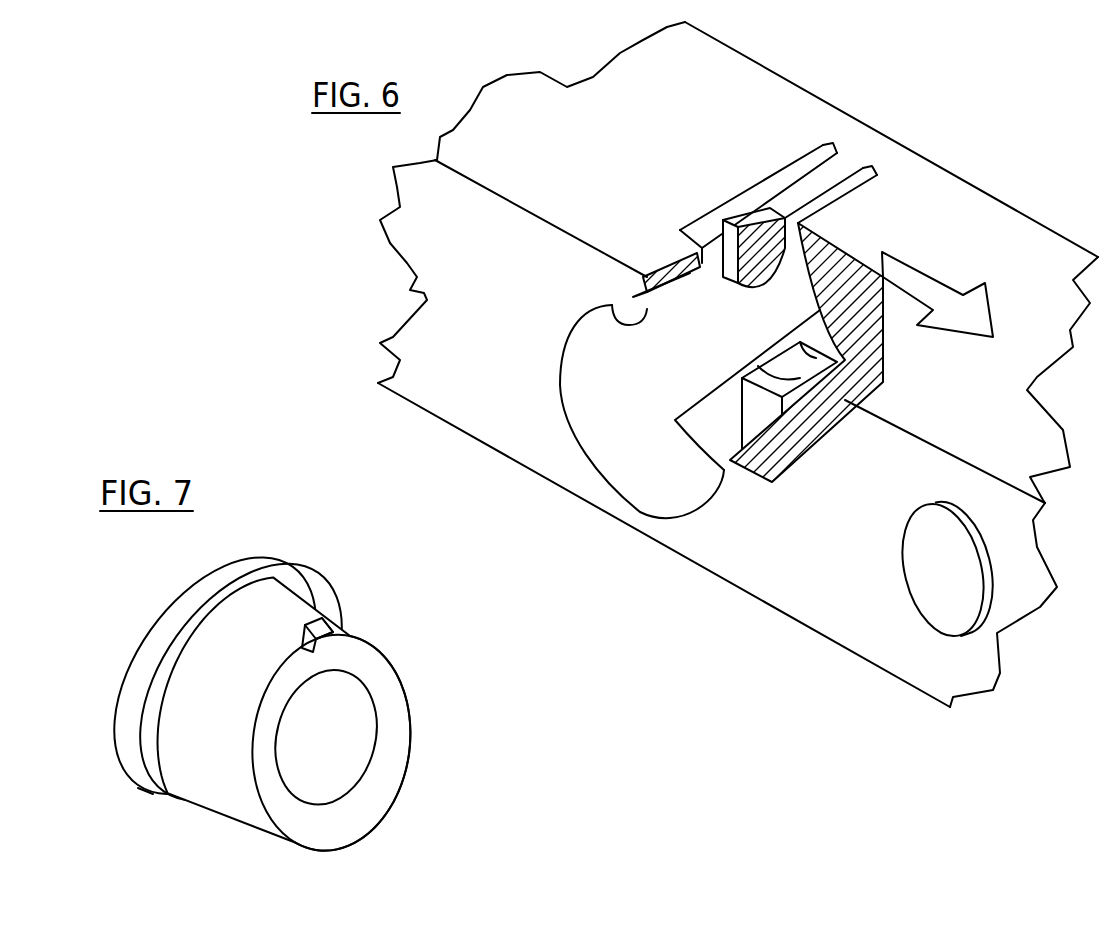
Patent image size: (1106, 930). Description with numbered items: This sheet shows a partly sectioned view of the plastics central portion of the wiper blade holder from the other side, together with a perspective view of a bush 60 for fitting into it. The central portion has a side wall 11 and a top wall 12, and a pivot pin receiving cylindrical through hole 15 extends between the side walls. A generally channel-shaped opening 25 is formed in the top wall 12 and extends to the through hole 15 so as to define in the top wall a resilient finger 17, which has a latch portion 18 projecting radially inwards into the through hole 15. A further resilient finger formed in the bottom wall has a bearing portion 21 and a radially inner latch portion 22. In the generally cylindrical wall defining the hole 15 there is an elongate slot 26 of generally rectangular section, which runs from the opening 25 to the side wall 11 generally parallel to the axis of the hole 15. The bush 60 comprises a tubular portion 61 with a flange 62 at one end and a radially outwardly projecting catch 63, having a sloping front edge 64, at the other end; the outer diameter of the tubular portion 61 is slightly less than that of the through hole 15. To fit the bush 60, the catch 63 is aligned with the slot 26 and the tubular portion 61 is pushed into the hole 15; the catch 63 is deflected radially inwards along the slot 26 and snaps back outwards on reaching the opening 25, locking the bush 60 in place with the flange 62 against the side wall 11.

In FIG. 6, the side wall 11 is at (757, 577).
In FIG. 6, the top wall 12 is at (967, 213).
In FIG. 6, the pivot pin receiving cylindrical through hole 15 is at (606, 398).
In FIG. 6, the resilient finger 17 is at (800, 185).
In FIG. 6, the latch portion 18 is at (746, 277).
In FIG. 6, the bearing portion 21 is at (797, 365).
In FIG. 6, the radially inner latch portion 22 is at (744, 368).
In FIG. 6, the channel-shaped opening 25 is at (727, 205).
In FIG. 6, the elongate slot 26 is at (636, 294).
In FIG. 7, the bush 60 is at (257, 693).
In FIG. 7, the tubular portion 61 is at (218, 772).
In FIG. 7, the flange 62 is at (160, 627).
In FIG. 7, the catch 63 is at (300, 637).
In FIG. 7, the sloping front edge 64 is at (347, 622).